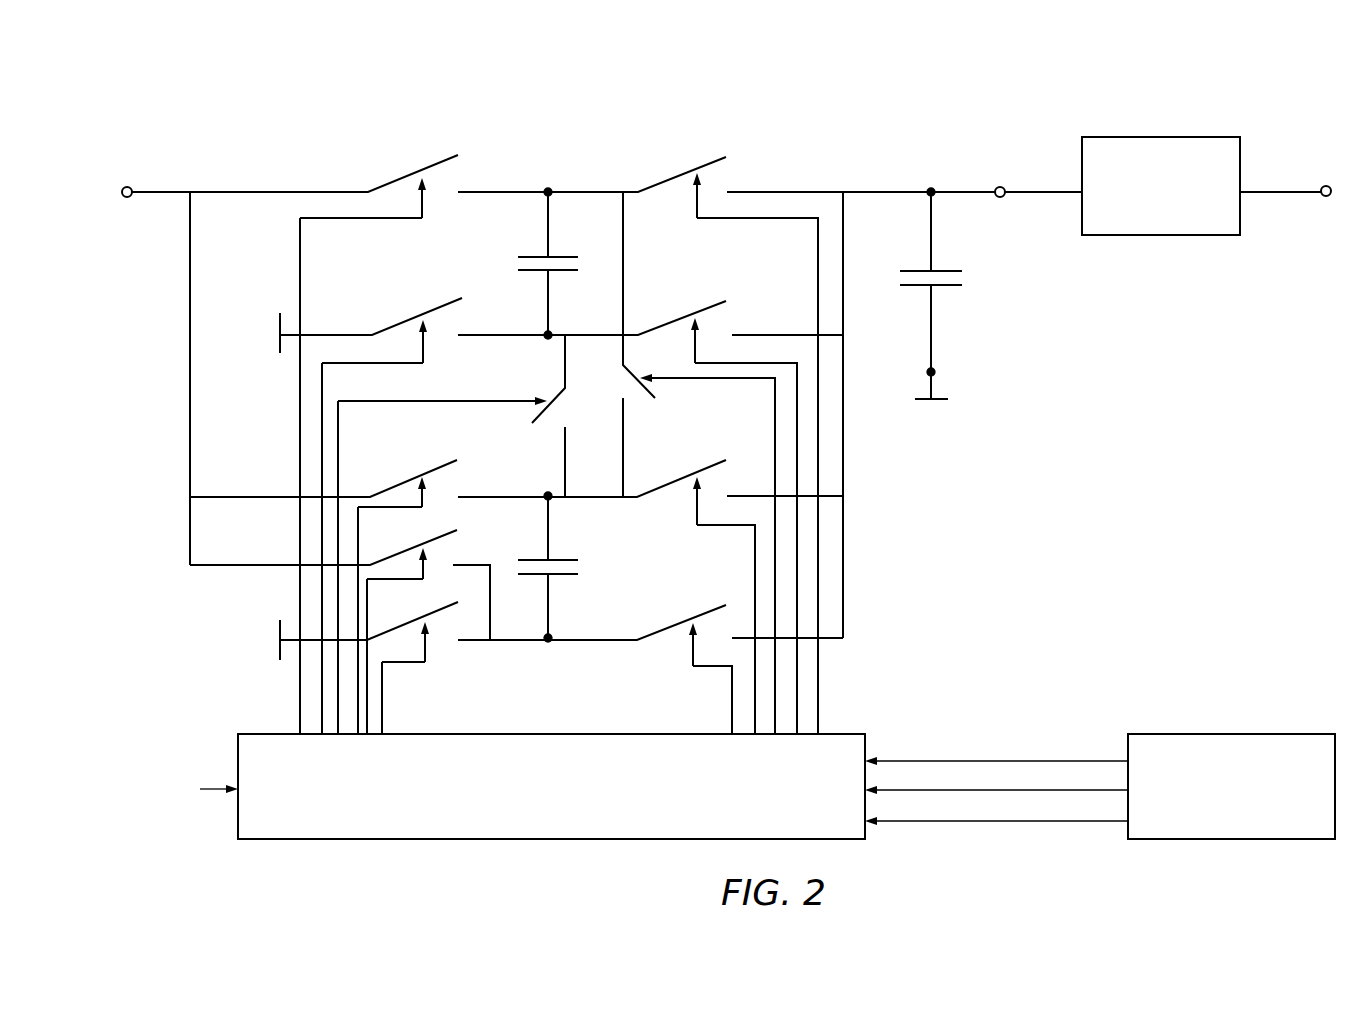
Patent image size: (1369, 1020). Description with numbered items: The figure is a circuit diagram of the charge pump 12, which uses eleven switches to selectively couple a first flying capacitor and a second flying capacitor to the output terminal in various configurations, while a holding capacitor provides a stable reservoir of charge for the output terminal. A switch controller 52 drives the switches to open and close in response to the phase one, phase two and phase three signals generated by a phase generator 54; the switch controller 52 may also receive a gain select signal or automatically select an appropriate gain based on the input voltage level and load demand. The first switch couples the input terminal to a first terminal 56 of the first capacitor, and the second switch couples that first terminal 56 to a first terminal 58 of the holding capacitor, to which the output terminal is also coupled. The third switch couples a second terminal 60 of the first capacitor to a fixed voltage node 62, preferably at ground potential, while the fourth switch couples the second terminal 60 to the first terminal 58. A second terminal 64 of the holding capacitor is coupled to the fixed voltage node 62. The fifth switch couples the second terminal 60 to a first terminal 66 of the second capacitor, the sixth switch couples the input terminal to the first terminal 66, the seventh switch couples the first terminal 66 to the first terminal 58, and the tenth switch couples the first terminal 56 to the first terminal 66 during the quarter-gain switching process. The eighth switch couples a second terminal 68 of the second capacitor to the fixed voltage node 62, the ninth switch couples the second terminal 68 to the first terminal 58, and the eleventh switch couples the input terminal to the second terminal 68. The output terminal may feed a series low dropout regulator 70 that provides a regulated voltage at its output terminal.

The charge pump 12 is at (558, 100).
The switch controller 52 is at (487, 786).
The phase generator 54 is at (1100, 786).
The first terminal of the first capacitor C1 56 is at (548, 188).
The first terminal of the holding capacitor C3 58 is at (931, 188).
The second terminal of the first capacitor C1 60 is at (548, 340).
The fixed voltage node 62 is at (278, 345).
The second terminal of the holding capacitor C3 64 is at (935, 372).
The first terminal of the second capacitor C2 66 is at (548, 492).
The second terminal of the second capacitor C2 68 is at (548, 642).
The series low dropout (LDO) regulator 70 is at (1180, 137).